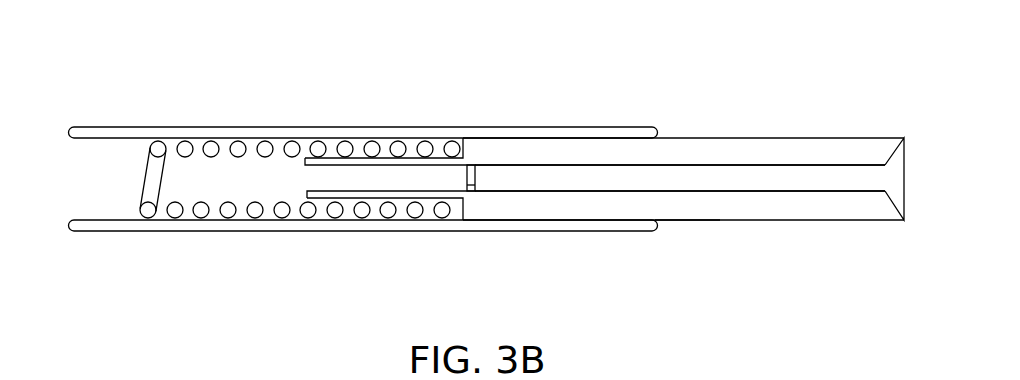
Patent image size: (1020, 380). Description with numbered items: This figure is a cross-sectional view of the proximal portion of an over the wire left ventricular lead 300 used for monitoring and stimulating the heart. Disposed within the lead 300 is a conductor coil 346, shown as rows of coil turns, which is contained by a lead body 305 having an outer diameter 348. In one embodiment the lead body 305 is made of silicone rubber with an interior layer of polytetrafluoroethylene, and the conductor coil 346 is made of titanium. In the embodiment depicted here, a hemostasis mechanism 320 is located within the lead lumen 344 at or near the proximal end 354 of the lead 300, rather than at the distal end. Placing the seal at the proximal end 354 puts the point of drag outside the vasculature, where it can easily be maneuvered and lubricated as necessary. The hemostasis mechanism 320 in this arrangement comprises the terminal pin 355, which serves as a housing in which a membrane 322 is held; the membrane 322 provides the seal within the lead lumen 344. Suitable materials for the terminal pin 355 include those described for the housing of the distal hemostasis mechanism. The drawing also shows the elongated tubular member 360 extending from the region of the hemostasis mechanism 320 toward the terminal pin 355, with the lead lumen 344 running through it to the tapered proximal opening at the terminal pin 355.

The lead 300 is at (562, 67).
The lead body 305 is at (102, 232).
The hemostasis mechanism 320 is at (477, 178).
The membrane 322 is at (470, 185).
The lead lumen 344 is at (902, 177).
The conductor coil 346 is at (201, 218).
The outer diameter 348 is at (240, 232).
The proximal end 354 is at (686, 258).
The terminal pin 355 is at (840, 138).
The inner tube 360 is at (735, 138).